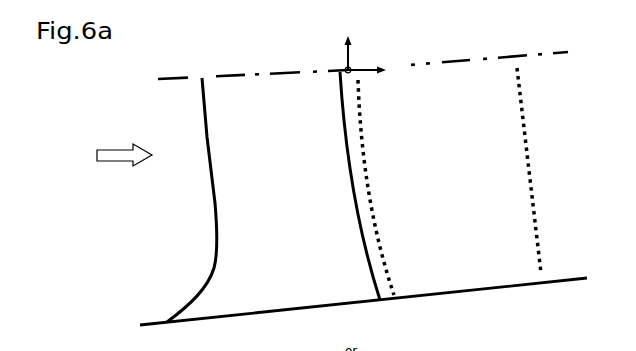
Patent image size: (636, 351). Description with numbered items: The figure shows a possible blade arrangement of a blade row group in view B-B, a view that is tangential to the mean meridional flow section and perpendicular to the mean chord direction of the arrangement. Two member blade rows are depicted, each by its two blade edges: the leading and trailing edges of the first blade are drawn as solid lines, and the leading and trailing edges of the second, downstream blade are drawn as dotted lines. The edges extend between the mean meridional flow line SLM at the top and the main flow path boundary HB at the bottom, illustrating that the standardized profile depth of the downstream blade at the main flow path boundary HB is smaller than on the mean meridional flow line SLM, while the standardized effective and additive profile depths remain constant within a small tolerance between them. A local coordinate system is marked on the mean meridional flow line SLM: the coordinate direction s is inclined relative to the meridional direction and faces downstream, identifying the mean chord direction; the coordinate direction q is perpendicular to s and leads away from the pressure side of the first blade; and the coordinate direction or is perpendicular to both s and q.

The mean meridional flow line SLM is at (335, 72).
The main flow path boundary HB is at (342, 305).
The coordinate direction or is at (347, 45).
The coordinate direction s is at (374, 66).
The coordinate direction q is at (354, 62).